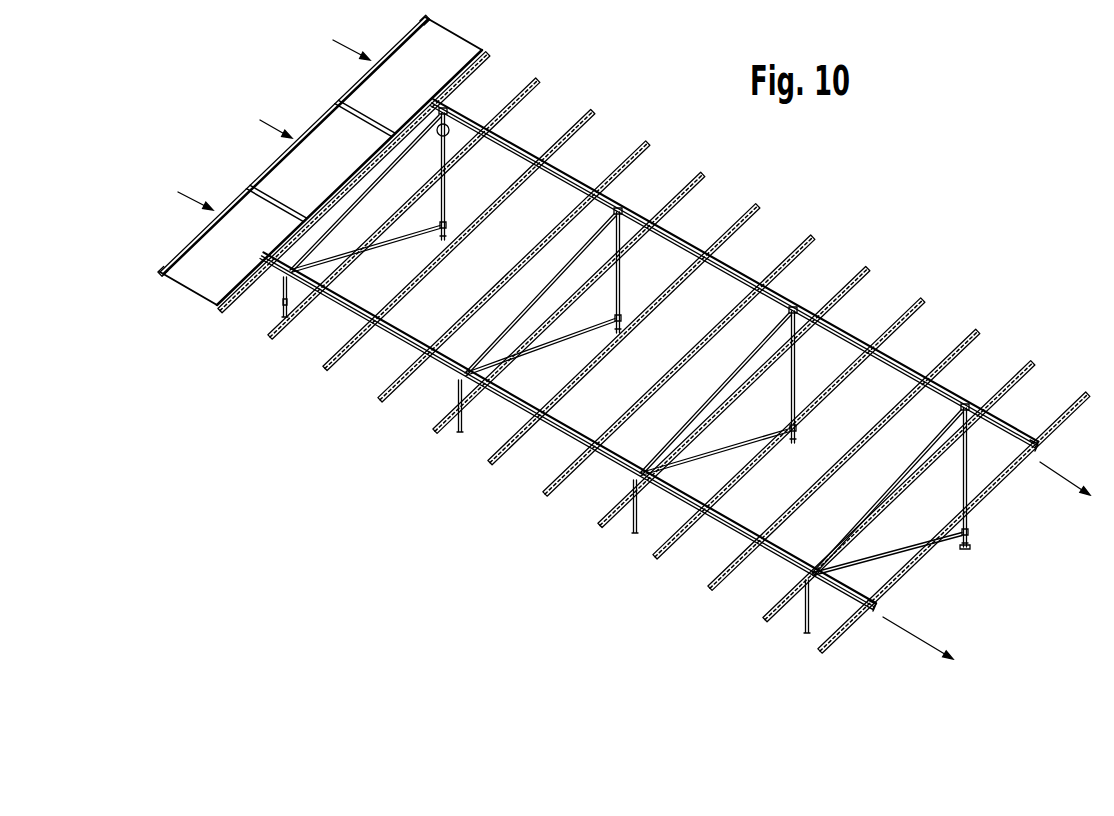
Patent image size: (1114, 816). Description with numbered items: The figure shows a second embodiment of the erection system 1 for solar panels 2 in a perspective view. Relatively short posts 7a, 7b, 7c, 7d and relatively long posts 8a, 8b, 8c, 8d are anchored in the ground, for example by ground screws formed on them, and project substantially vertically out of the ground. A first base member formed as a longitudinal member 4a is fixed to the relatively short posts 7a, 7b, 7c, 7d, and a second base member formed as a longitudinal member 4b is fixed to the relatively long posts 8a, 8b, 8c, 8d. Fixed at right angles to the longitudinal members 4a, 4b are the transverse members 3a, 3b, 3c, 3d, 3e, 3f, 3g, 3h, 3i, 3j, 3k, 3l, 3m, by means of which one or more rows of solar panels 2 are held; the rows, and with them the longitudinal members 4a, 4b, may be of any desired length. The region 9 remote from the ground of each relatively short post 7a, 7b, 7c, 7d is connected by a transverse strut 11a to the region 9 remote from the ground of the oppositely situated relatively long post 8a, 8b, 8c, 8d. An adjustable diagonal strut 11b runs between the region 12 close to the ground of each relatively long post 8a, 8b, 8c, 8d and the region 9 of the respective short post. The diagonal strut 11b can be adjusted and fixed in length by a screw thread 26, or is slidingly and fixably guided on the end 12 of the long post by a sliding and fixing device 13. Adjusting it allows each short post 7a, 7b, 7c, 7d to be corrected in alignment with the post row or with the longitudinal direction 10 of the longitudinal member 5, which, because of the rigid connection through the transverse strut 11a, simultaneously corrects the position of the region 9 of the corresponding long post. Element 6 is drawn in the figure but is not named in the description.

The erection system 1 is at (850, 240).
The solar panels 2 is at (415, 86).
The transverse member 3a is at (813, 660).
The transverse member 3b is at (768, 622).
The transverse member 3c is at (712, 590).
The transverse member 3d is at (657, 560).
The transverse member 3e is at (602, 528).
The transverse member 3f is at (547, 496).
The transverse member 3g is at (492, 465).
The transverse member 3h is at (437, 434).
The transverse member 3i is at (382, 403).
The transverse member 3j is at (325, 371).
The transverse member 3k is at (272, 341).
The transverse member 3l is at (217, 308).
The transverse member 3m is at (162, 278).
The longitudinal member 4a is at (400, 336).
The longitudinal member 4b is at (576, 182).
The longitudinal member 5 is at (843, 603).
The rail end portion 6 is at (1006, 456).
The relatively short post 7a is at (806, 633).
The relatively short post 7b is at (636, 533).
The relatively short post 7c is at (459, 433).
The relatively short post 7d is at (283, 312).
The relatively long post 8a is at (968, 456).
The relatively long post 8b is at (798, 358).
The relatively long post 8c is at (623, 272).
The relatively long post 8d is at (448, 185).
The region remote from the ground 9 is at (449, 122).
The longitudinal direction 10 is at (905, 676).
The transverse strut 11a is at (398, 242).
The adjustable diagonal strut 11b is at (362, 206).
The region close to the ground 12 is at (452, 228).
The sliding and fixing device 13 is at (750, 389).
The screw thread 26 is at (960, 550).